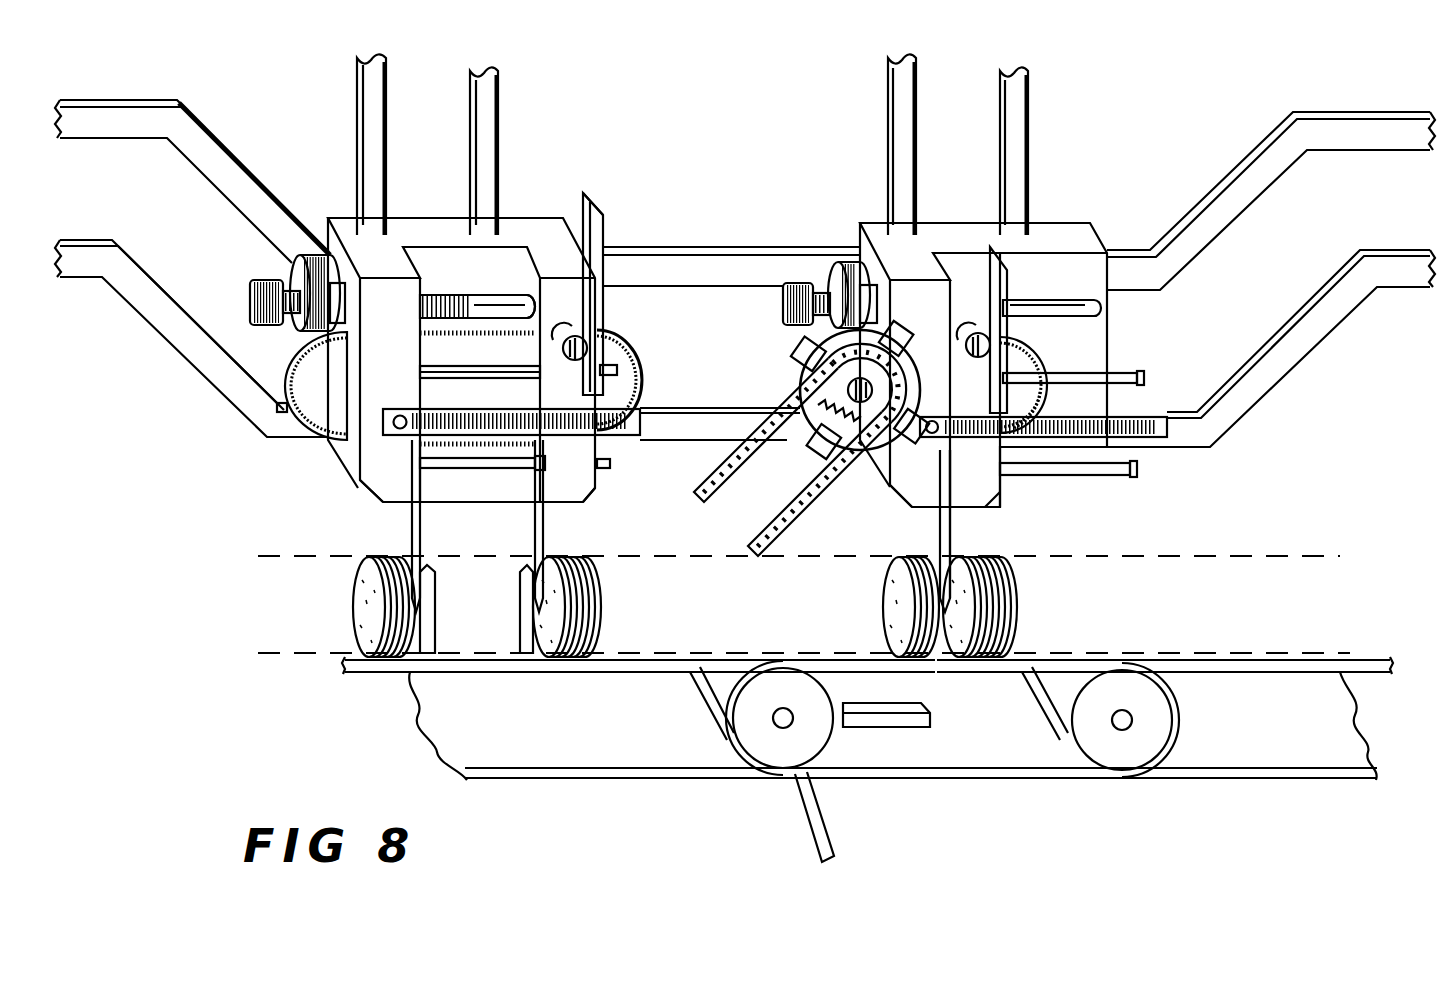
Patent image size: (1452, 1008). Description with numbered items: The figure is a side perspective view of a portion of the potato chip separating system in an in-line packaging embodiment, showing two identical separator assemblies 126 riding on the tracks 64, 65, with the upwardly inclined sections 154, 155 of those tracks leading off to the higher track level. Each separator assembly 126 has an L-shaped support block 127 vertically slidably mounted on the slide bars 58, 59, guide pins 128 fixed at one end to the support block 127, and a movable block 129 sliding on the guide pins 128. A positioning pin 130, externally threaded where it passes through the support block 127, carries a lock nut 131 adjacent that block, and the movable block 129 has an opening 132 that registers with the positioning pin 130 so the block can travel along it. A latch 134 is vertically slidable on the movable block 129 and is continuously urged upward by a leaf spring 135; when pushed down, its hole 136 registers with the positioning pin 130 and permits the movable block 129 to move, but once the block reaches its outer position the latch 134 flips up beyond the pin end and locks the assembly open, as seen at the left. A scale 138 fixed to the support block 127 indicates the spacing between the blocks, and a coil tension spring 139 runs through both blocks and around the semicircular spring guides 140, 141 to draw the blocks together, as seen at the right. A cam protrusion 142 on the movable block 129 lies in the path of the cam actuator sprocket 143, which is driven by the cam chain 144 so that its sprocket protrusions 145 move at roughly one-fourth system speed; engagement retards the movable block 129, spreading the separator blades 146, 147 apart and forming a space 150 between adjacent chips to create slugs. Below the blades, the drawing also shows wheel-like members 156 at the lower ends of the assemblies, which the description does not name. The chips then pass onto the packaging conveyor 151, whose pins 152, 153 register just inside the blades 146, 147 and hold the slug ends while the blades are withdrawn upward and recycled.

The slide bar 58 is at (362, 98).
The slide bar 59 is at (493, 104).
The track 64 is at (700, 430).
The track 65 is at (770, 250).
The separator assembly 126 is at (428, 222).
The support block 127 is at (378, 491).
The guide pins 128 is at (613, 372).
The movable block 129 is at (578, 490).
The positioning pin 130 is at (487, 300).
The lock nut 131 is at (297, 272).
The opening 132 is at (537, 305).
The latch 134 is at (607, 238).
The leaf spring 135 is at (605, 337).
The hole 136 is at (580, 205).
The scale 138 is at (647, 436).
The coil tension spring 139 is at (478, 337).
The spring guide 140 is at (307, 363).
The spring guide 141 is at (625, 384).
The cam protrusion 142 is at (578, 360).
The cam actuator sprocket 143 is at (833, 432).
The cam chain 144 is at (787, 397).
The sprocket protrusion 145 is at (803, 340).
The separator blade 146 is at (420, 538).
The separator blade 147 is at (535, 541).
The space 150 is at (490, 632).
The packaging conveyor 151 is at (391, 665).
The pin 152 is at (435, 602).
The pin 153 is at (522, 594).
The upwardly inclined section 154 is at (155, 320).
The upwardly inclined section 155 is at (192, 140).
The roller wheel 156 is at (355, 599).